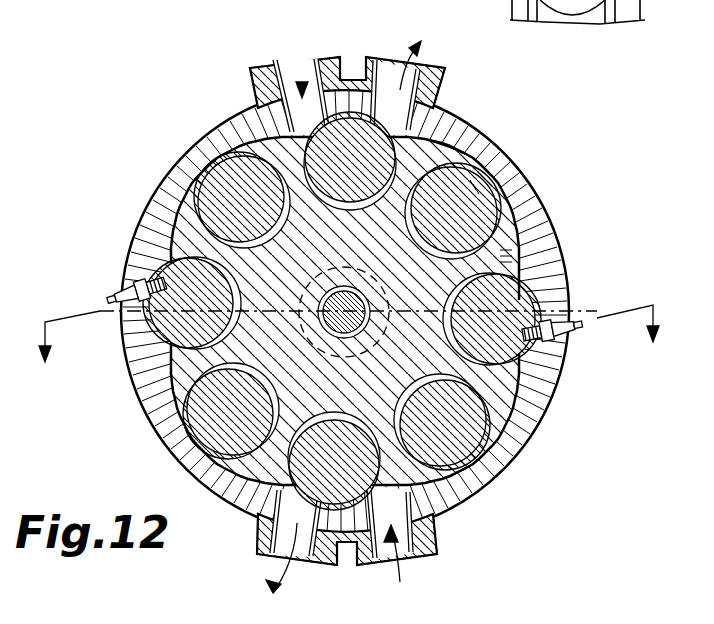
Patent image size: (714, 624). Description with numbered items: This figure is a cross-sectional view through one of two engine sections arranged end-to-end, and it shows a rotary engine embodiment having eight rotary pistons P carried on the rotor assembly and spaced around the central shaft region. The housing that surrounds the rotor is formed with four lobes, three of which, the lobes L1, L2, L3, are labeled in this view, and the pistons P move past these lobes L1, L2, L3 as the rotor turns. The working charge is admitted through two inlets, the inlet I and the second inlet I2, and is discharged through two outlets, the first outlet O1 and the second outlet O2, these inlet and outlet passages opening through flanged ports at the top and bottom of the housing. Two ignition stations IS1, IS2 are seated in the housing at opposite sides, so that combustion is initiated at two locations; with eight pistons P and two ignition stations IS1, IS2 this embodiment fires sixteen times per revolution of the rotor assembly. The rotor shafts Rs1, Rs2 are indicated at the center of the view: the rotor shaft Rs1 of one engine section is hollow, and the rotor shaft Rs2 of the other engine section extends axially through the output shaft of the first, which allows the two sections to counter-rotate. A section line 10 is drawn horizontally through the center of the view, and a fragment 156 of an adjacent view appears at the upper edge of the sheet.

The second inlet I2 is at (302, 95).
The first outlet O1 is at (400, 92).
The second outlet O2 is at (275, 570).
The inlet I is at (410, 557).
The rotary piston P is at (325, 125).
The first lobe L1 is at (455, 502).
The second lobe L2 is at (517, 292).
The third lobe L3 is at (395, 135).
The rotor shaft Rs1 is at (470, 185).
The rotor shaft Rs2 is at (505, 260).
The first ignition station IS1 is at (558, 345).
The second ignition station IS2 is at (125, 285).
The section line 10- 10 is at (355, 348).
The housing member 156 is at (593, 27).